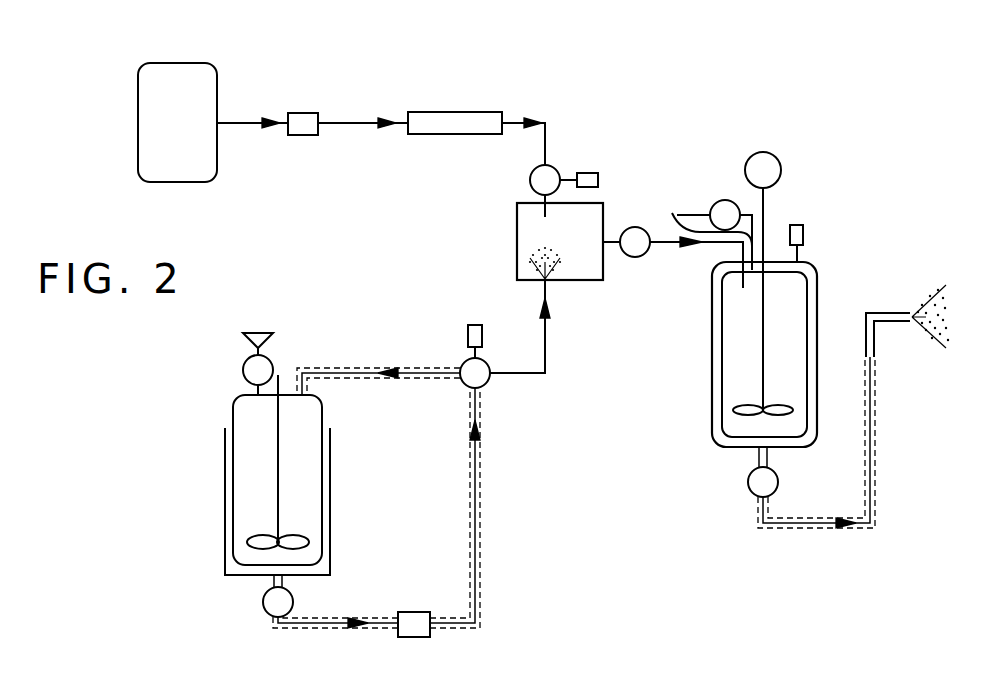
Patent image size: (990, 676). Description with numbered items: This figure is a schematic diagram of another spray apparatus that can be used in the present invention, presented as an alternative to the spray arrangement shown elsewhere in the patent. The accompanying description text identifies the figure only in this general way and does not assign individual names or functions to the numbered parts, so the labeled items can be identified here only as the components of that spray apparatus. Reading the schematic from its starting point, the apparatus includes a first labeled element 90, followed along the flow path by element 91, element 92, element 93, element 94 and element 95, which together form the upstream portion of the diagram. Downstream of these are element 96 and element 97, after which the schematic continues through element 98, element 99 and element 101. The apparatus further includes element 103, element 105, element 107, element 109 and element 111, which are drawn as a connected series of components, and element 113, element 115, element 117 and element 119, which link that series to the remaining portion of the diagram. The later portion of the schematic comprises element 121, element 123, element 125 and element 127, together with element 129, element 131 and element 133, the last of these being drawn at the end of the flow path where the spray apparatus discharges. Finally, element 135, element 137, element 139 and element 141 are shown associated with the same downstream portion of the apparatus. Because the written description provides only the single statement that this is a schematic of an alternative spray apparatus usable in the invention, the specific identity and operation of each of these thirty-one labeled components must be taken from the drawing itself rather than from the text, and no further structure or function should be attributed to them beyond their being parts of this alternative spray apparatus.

The supply tank 90 is at (184, 63).
The feed line 91 is at (238, 122).
The pump 92 is at (302, 113).
The line 93 is at (344, 124).
The heater 94 is at (432, 112).
The line 95 is at (548, 127).
The valve 96 is at (530, 181).
The spray chamber 97 is at (530, 230).
The jacketed vessel 98 is at (246, 508).
The agitator 99 is at (280, 512).
The funnel valve 101 is at (246, 342).
The jacketed line 103 is at (339, 629).
The pump 105 is at (408, 612).
The jacketed line 107 is at (482, 450).
The valve 109 is at (462, 356).
The jacketed return line 111 is at (343, 372).
The line 113 is at (547, 351).
The outlet line 115 is at (608, 242).
The valve 117 is at (628, 258).
The feed line 119 is at (668, 243).
The reactor vessel 121 is at (791, 342).
The vessel wall 123 is at (817, 403).
The impeller 125 is at (745, 408).
The valve 127 is at (778, 483).
The jacketed discharge line 129 is at (807, 528).
The nozzle line 131 is at (881, 312).
The spray 133 is at (934, 344).
The bypass line 135 is at (676, 216).
The motor 137 is at (781, 164).
The valve 139 is at (716, 200).
The sensor 141 is at (804, 228).